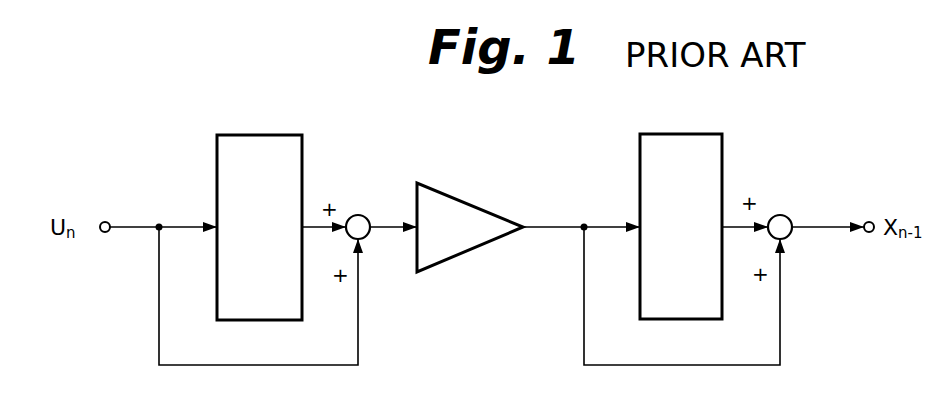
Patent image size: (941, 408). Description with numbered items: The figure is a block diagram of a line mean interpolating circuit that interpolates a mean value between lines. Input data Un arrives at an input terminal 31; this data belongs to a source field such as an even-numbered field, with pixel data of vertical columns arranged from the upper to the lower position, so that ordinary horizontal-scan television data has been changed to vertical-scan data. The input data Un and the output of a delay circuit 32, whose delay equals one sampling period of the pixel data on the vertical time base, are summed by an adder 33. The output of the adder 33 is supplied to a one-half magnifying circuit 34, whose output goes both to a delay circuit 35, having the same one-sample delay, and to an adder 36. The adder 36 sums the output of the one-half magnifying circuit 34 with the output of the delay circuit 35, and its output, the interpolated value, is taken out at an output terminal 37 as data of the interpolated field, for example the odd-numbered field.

The input terminal 31 is at (105, 233).
The delay circuit 32 is at (217, 181).
The adder 33 is at (362, 216).
The ½ magnifying circuit 34 is at (490, 245).
The delay circuit 35 is at (640, 175).
The adder 36 is at (787, 216).
The output terminal 37 is at (872, 221).